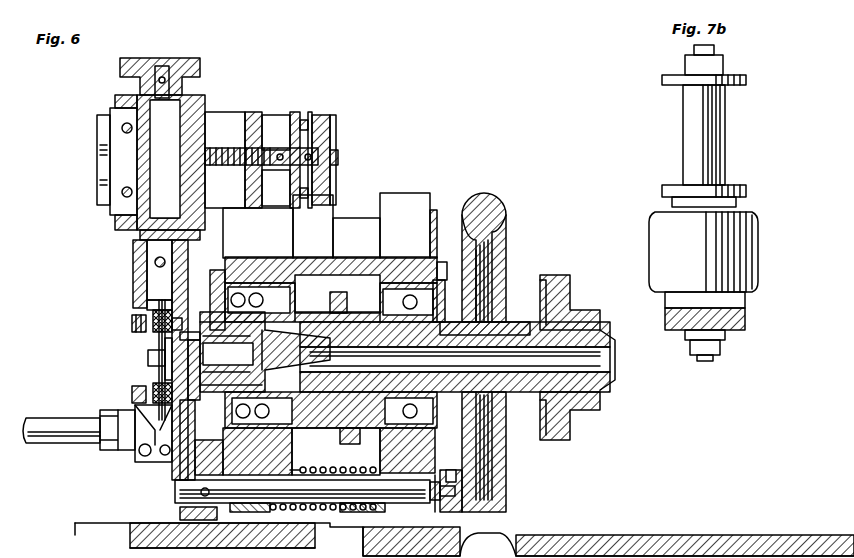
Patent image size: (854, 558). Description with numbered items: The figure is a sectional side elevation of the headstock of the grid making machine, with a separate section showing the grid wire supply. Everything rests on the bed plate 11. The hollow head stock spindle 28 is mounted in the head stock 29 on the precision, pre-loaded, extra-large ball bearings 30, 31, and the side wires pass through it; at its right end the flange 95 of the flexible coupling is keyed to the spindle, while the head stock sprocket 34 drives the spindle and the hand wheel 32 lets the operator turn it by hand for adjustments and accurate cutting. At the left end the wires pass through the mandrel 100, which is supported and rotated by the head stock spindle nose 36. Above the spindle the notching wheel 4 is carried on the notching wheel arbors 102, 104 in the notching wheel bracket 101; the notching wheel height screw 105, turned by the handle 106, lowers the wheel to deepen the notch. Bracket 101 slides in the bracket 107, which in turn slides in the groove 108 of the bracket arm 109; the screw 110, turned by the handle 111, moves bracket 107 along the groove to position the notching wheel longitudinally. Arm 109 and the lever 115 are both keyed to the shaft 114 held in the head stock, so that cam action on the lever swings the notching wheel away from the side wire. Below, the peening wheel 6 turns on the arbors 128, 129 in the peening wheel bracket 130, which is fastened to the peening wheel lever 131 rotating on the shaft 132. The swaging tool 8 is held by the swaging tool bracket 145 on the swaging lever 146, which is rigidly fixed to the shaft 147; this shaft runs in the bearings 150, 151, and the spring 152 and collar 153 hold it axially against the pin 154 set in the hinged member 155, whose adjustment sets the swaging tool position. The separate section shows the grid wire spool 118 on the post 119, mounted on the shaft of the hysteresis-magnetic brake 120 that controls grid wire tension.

In FIG. 6, the handle 106 is at (202, 66).
In FIG. 6, the notching wheel height screw 105 is at (152, 148).
In FIG. 6, the notching wheel bracket 101 is at (133, 250).
In FIG. 6, the groove 108 is at (97, 147).
In FIG. 6, the bracket 107 is at (112, 170).
In FIG. 6, the bracket arm 109 is at (97, 120).
In FIG. 6, the screw 110 is at (226, 168).
In FIG. 6, the handle 111 is at (331, 123).
In FIG. 6, the lever 115 is at (318, 220).
In FIG. 6, the shaft 114 is at (374, 212).
In FIG. 6, the head stock 29 is at (405, 258).
In FIG. 6, the head stock sprocket 34 is at (338, 292).
In FIG. 6, the head stock spindle nose 36 is at (207, 300).
In FIG. 6, the ball bearing 31 is at (250, 283).
In FIG. 6, the ball bearing 30 is at (446, 300).
In FIG. 6, the hand wheel 32 is at (500, 214).
In FIG. 6, the flange 95 is at (568, 296).
In FIG. 6, the head stock spindle 28 is at (610, 376).
In FIG. 6, the mandrel 100 is at (160, 345).
In FIG. 6, the bearing 151 is at (395, 466).
In FIG. 6, the arbor 129 is at (180, 415).
In FIG. 6, the bearing 150 is at (272, 468).
In FIG. 6, the spring 152 is at (330, 466).
In FIG. 6, the collar 153 is at (358, 516).
In FIG. 6, the shaft 147 is at (180, 500).
In FIG. 6, the pin 154 is at (435, 480).
In FIG. 6, the hinged member 155 is at (465, 472).
In FIG. 6, the bed plate 11 is at (560, 540).
In FIG. 6, the notching wheel 4 is at (160, 294).
In FIG. 6, the notching wheel arbor 104 is at (185, 318).
In FIG. 6, the notching wheel arbor 102 is at (132, 324).
In FIG. 6, the swaging tool 8 is at (148, 358).
In FIG. 6, the peening wheel 6 is at (158, 378).
In FIG. 6, the swaging tool bracket 145 is at (175, 384).
In FIG. 6, the arbor 128 is at (132, 398).
In FIG. 6, the shaft 132 is at (60, 410).
In FIG. 6, the peening wheel lever 131 is at (110, 452).
In FIG. 6, the peening wheel bracket 130 is at (146, 462).
In FIG. 6, the swaging lever 146 is at (180, 472).
In FIG. 7B, the spool 118 is at (724, 136).
In FIG. 7B, the hysteresis-magnetic brake 120 is at (752, 252).
In FIG. 7B, the post 119 is at (732, 340).